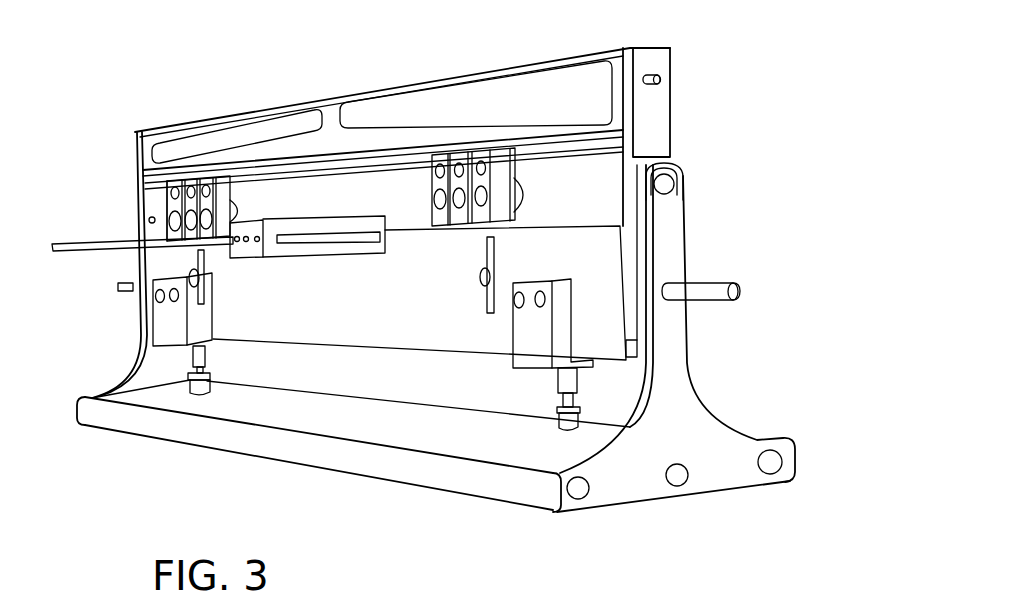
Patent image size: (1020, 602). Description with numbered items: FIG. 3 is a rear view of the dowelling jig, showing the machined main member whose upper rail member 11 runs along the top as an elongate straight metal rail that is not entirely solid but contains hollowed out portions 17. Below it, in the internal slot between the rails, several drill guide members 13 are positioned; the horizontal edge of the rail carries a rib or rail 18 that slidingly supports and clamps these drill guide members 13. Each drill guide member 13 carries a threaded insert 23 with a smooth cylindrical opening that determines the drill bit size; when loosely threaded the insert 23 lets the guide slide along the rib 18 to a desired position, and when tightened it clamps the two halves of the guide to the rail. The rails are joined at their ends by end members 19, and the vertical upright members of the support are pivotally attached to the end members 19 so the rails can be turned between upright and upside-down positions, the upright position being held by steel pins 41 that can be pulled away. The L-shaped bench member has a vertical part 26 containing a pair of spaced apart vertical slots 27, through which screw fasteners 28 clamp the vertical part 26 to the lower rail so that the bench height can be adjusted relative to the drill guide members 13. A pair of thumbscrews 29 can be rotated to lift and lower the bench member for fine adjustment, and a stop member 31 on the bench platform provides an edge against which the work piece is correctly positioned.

The upper rail member 11 is at (237, 117).
The hollowed out portions 17 is at (183, 160).
The drill guide member 13 is at (431, 189).
The insert 23 is at (522, 188).
The end member 19 is at (650, 103).
The rib or rail 18 is at (650, 160).
The steel pin 41 is at (722, 283).
The screw fastener 28 is at (187, 267).
The stop member 31 is at (290, 256).
The vertical slot 27 is at (207, 303).
The vertical part 26 is at (345, 323).
The thumbscrew 29 is at (200, 396).